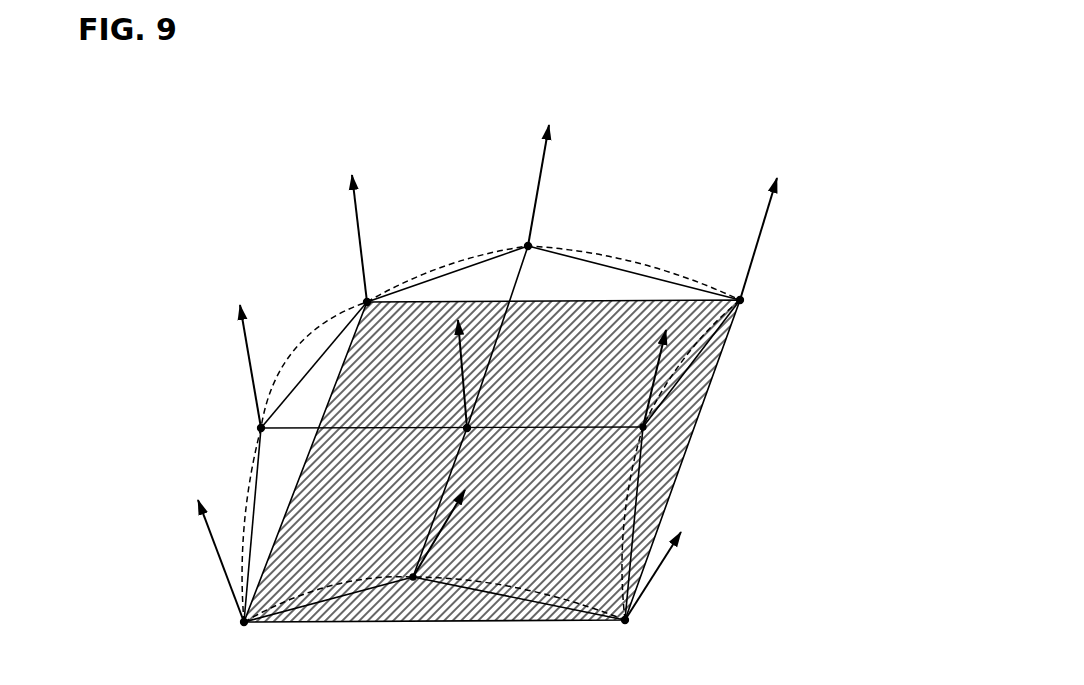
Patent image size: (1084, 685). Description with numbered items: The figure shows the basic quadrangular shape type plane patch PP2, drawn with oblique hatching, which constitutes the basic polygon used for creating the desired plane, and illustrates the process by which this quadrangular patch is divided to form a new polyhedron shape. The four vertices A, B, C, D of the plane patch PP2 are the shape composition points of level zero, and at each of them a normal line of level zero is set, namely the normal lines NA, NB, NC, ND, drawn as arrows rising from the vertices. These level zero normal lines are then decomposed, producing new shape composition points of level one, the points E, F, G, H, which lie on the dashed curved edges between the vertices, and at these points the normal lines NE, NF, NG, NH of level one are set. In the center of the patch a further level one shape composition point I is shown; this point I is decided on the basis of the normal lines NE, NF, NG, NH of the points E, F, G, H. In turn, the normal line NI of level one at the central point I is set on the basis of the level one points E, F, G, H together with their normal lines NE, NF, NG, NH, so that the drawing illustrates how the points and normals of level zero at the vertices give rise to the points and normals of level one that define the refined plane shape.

The basic quadrangular plane patch PP2 is at (308, 94).
The vertex of plane patch A is at (240, 638).
The vertex of plane patch B is at (621, 636).
The vertex of plane patch C is at (754, 300).
The vertex of plane patch D is at (377, 284).
The shape composition point of level one E is at (413, 593).
The shape composition point of level one F is at (651, 437).
The shape composition point of level one G is at (542, 233).
The shape composition point of level one H is at (246, 432).
The shape composition point of level one at center I is at (474, 443).
The normal line of level zero NA is at (210, 547).
The normal line of level zero NB is at (668, 564).
The normal line of level zero NC is at (765, 224).
The normal line of level zero ND is at (346, 224).
The normal line of level one NE is at (459, 525).
The normal line of level one NF is at (660, 368).
The normal line of level one NG is at (560, 184).
The normal line of level one NH is at (239, 355).
The normal line of level one at center point NI is at (435, 374).